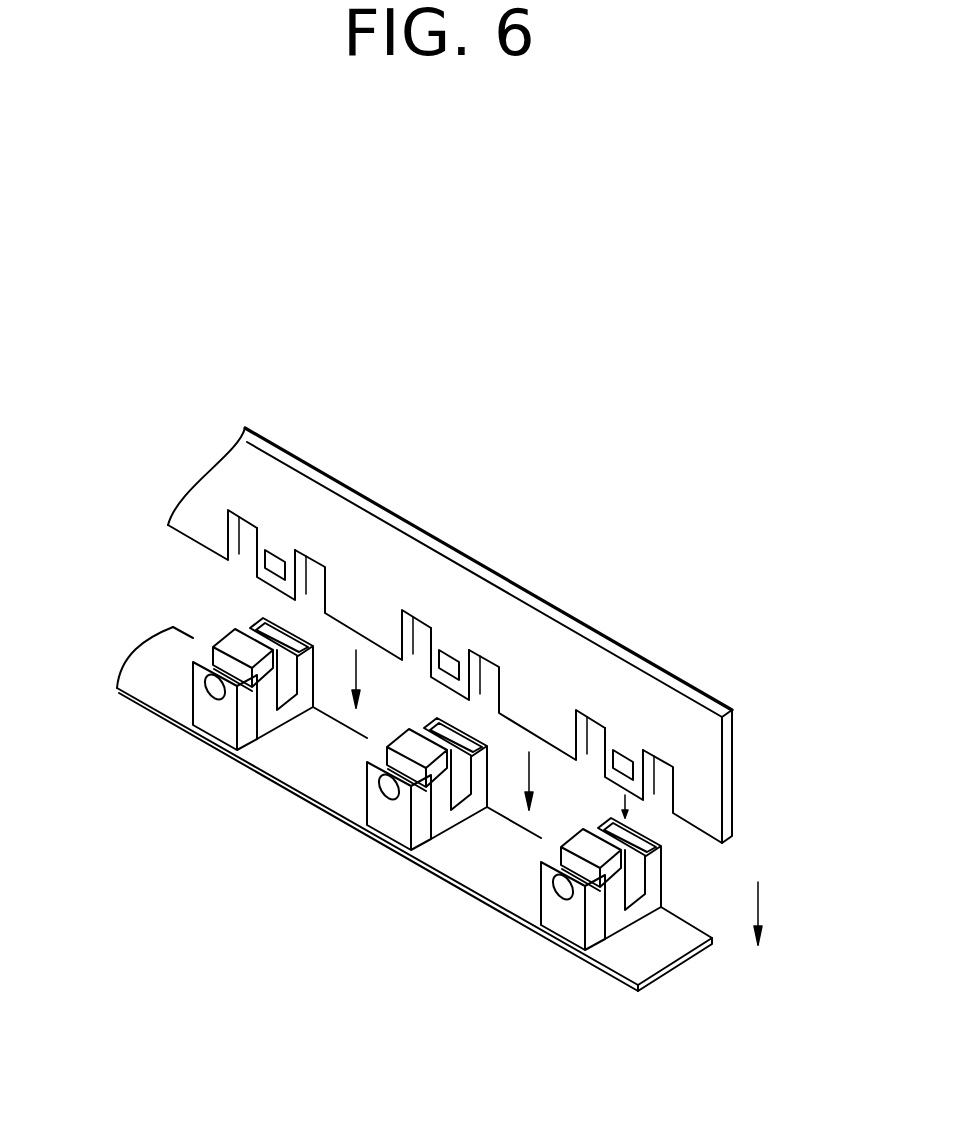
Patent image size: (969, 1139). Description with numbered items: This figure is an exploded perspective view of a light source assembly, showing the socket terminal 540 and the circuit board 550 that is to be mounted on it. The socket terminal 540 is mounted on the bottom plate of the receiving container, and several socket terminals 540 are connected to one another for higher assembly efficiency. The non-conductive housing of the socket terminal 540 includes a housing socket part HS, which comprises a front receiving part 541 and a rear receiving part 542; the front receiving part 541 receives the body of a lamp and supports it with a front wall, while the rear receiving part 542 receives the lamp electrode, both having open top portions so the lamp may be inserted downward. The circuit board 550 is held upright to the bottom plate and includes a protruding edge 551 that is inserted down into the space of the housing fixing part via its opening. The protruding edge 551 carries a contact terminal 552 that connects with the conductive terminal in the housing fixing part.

The socket terminal 540 is at (126, 585).
The front receiving part 541 is at (540, 892).
The rear receiving part 542 is at (600, 905).
The circuit board 550 is at (505, 635).
The protruding edge 551 is at (622, 745).
The contact terminal 552 is at (630, 772).
The housing socket part HS is at (508, 1050).